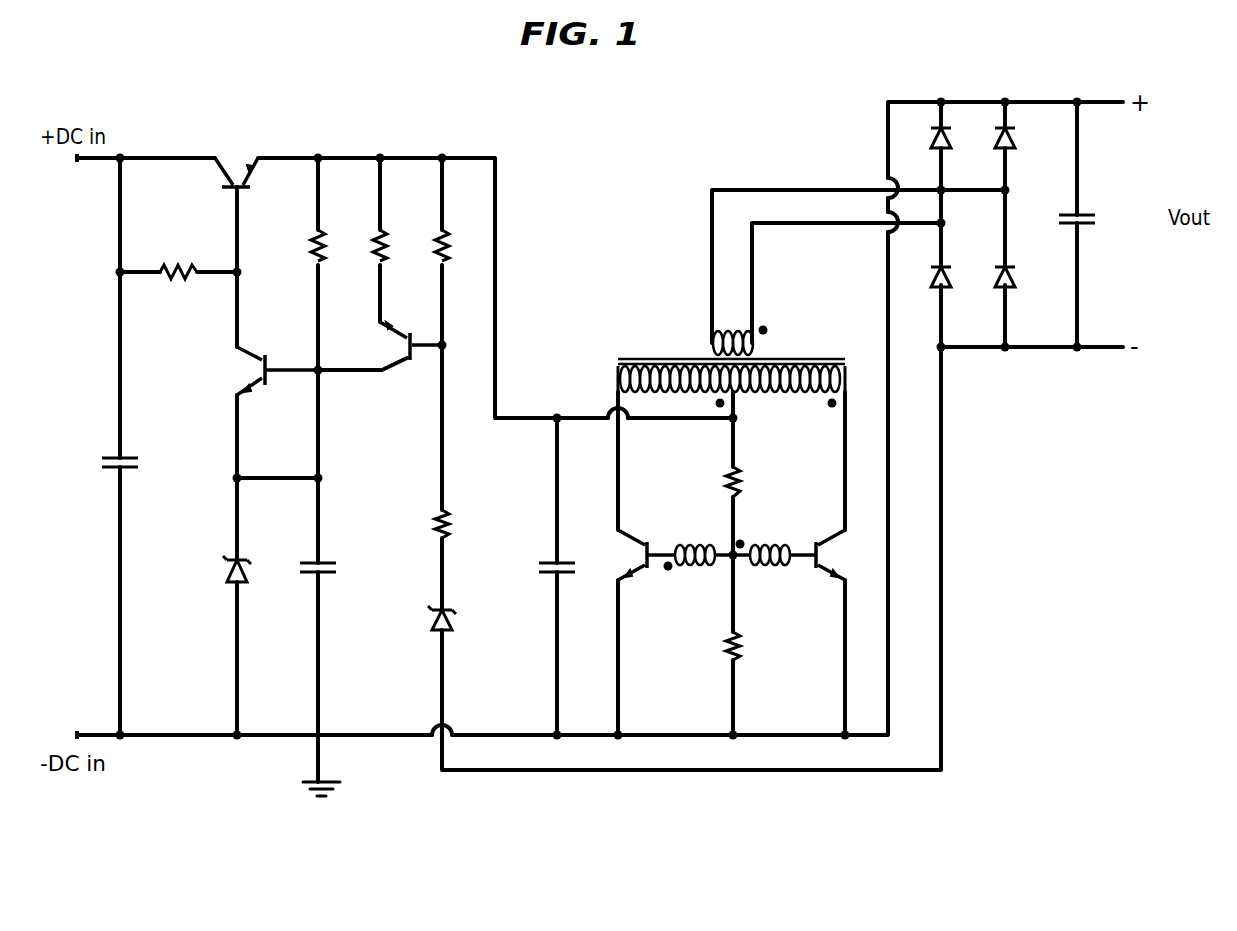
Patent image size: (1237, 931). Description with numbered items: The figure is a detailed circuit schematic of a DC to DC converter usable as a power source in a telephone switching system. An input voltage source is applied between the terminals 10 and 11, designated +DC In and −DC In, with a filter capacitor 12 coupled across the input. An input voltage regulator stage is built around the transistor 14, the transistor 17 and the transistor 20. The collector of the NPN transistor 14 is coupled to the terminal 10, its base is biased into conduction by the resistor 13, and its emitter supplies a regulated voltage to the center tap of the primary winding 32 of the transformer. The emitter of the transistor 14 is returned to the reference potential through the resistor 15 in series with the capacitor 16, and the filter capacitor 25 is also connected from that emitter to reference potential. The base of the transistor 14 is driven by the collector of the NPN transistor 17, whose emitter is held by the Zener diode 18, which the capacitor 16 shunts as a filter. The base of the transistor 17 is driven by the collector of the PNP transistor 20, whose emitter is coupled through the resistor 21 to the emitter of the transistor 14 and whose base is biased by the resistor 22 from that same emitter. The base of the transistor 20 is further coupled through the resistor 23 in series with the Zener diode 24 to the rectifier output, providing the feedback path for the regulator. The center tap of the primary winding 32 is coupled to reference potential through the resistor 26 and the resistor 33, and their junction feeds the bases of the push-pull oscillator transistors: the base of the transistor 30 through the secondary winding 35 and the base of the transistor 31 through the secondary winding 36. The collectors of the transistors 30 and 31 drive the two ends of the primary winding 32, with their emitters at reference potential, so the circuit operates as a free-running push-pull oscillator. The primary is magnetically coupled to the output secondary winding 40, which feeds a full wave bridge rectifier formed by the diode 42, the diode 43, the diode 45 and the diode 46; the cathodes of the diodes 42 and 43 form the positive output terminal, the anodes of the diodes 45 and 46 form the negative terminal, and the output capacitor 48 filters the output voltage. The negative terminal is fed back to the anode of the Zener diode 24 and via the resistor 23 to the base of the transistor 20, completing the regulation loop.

The input terminal 10 is at (79, 158).
The input terminal 11 is at (92, 735).
The filter capacitor 12 is at (113, 458).
The resistor 13 is at (182, 280).
The transistor 14 is at (226, 176).
The resistor 15 is at (312, 262).
The capacitor 16 is at (306, 577).
The transistor 17 is at (251, 352).
The Zener diode 18 is at (226, 570).
The transistor 20 is at (398, 374).
The resistor 21 is at (374, 232).
The resistor 22 is at (437, 232).
The resistor 23 is at (436, 518).
The Zener diode 24 is at (433, 620).
The capacitor 25 is at (572, 573).
The resistor 26 is at (754, 456).
The transistor 30 is at (630, 536).
The transistor 31 is at (830, 536).
The primary winding 32 is at (820, 358).
The resistor 33 is at (725, 646).
The secondary winding 35 is at (686, 566).
The secondary winding 36 is at (772, 566).
The output secondary winding 40 is at (770, 353).
The diode 42 is at (932, 140).
The diode 43 is at (1012, 150).
The diode 45 is at (936, 292).
The diode 46 is at (1010, 289).
The output capacitor 48 is at (1093, 225).